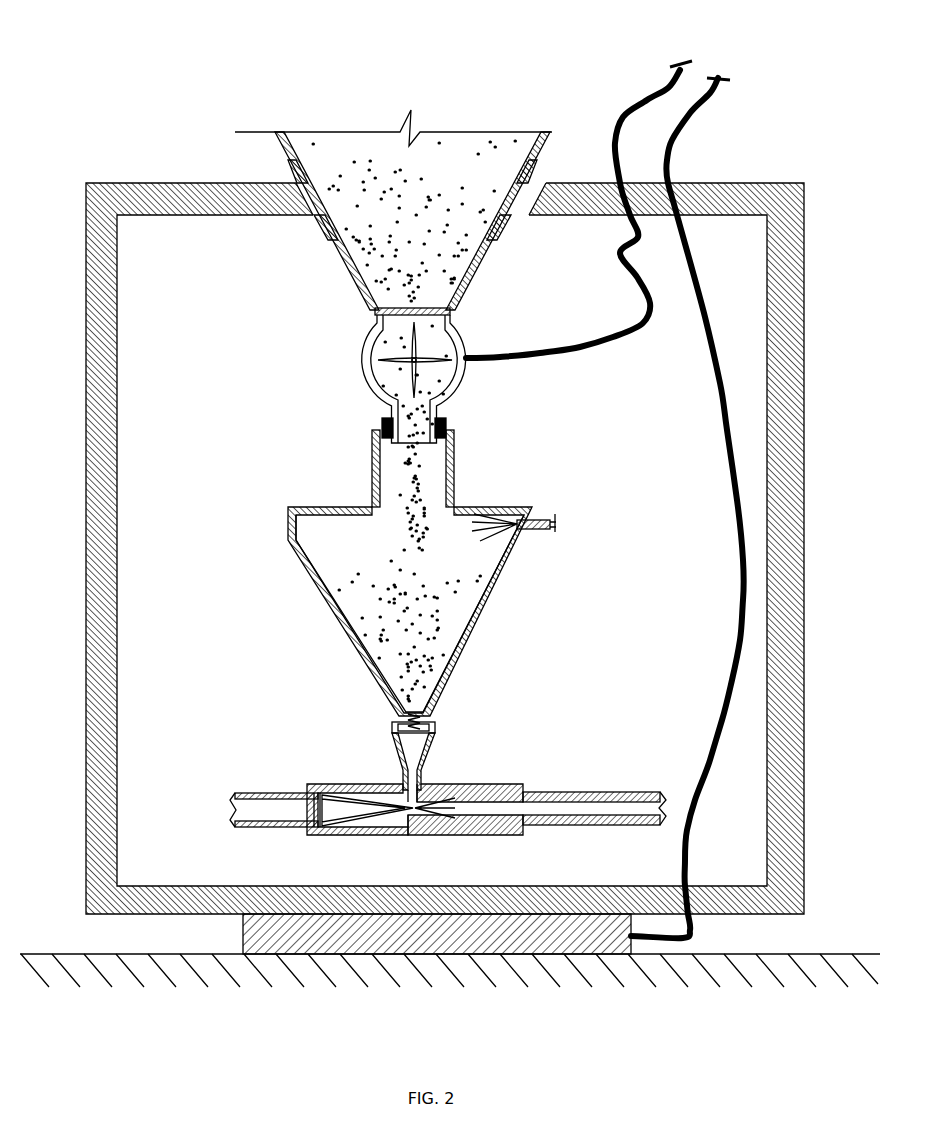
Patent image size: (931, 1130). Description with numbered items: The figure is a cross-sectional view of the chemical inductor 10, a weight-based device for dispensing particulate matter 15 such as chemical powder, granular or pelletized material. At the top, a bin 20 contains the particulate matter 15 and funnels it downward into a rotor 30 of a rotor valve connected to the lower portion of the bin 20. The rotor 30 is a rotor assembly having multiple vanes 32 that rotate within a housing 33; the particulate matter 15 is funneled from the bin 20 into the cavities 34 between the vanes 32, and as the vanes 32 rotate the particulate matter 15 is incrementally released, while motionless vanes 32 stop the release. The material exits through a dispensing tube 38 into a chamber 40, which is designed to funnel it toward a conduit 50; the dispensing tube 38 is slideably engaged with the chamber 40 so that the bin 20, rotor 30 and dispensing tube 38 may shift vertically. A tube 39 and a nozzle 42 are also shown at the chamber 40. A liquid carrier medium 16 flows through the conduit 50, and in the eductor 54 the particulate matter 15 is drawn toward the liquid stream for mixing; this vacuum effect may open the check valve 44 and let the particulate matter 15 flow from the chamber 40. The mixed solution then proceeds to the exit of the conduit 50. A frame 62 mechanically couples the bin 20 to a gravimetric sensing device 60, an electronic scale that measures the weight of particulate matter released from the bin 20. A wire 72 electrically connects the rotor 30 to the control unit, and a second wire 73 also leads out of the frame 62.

The chemical inductor 10 is at (118, 52).
The particulate matter 15 is at (413, 243).
The liquid carrier medium 16 is at (478, 530).
The bin 20 is at (353, 280).
The rotor 30 is at (364, 348).
The vanes 32 is at (410, 377).
The housing 33 is at (462, 386).
The cavities 34 is at (440, 345).
The dispensing tube 38 is at (434, 432).
The inlet tube 39 is at (384, 446).
The chamber 40 is at (322, 594).
The gas nozzle 42 is at (550, 521).
The check valve 44 is at (430, 728).
The conduit 50 is at (350, 784).
The eductor 54 is at (406, 826).
The gravimetric sensing device 60 is at (243, 941).
The frame 62 is at (86, 536).
The wire 72 is at (642, 104).
The supply cable 73 is at (740, 110).